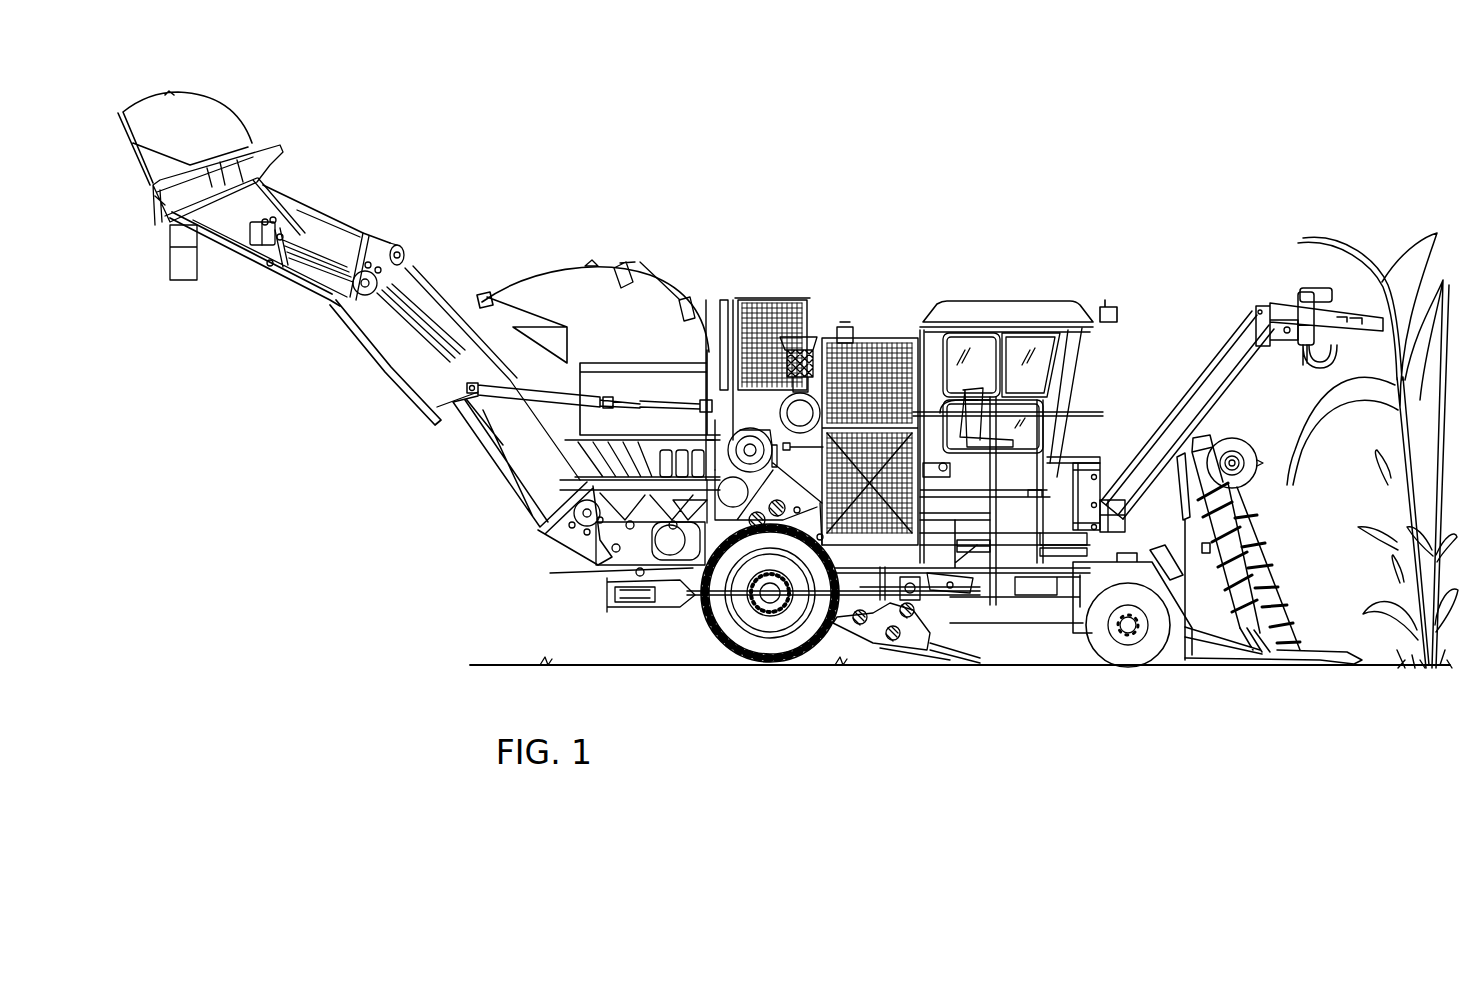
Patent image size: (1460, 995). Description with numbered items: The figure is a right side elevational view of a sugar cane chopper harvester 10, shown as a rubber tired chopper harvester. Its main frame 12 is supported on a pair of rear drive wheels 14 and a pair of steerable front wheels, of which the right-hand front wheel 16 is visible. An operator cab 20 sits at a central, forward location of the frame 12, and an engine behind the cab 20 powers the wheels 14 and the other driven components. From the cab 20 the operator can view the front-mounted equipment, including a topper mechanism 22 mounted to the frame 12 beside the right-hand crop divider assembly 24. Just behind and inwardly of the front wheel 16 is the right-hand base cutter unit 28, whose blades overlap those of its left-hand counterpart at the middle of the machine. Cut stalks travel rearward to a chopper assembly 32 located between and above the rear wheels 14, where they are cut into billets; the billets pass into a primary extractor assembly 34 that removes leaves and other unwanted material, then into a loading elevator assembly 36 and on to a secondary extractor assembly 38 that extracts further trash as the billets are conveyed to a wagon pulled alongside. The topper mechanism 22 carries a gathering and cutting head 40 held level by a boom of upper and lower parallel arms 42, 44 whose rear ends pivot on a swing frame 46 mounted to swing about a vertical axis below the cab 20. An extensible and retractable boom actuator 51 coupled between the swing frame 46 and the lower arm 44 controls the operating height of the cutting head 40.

The sugar cane chopper harvester 10 is at (842, 218).
The main frame 12 is at (1028, 630).
The rear drive wheels 14 is at (710, 637).
The steerable front wheel 16 is at (1157, 660).
The operator cab 20 is at (1005, 303).
The topper mechanism 22 is at (1223, 328).
The right-hand crop divider assembly 24 is at (1275, 581).
The right-hand base cutter unit 28 is at (930, 643).
The chopper assembly 32 is at (700, 427).
The primary extractor assembly 34 is at (663, 252).
The loading elevator assembly 36 is at (460, 288).
The secondary extractor assembly 38 is at (283, 100).
The gathering and cutting head 40 is at (1302, 368).
The upper arm 42 is at (1205, 370).
The lower arm 44 is at (1205, 400).
The swing frame 46 is at (1103, 457).
The boom actuator 51 is at (1113, 512).